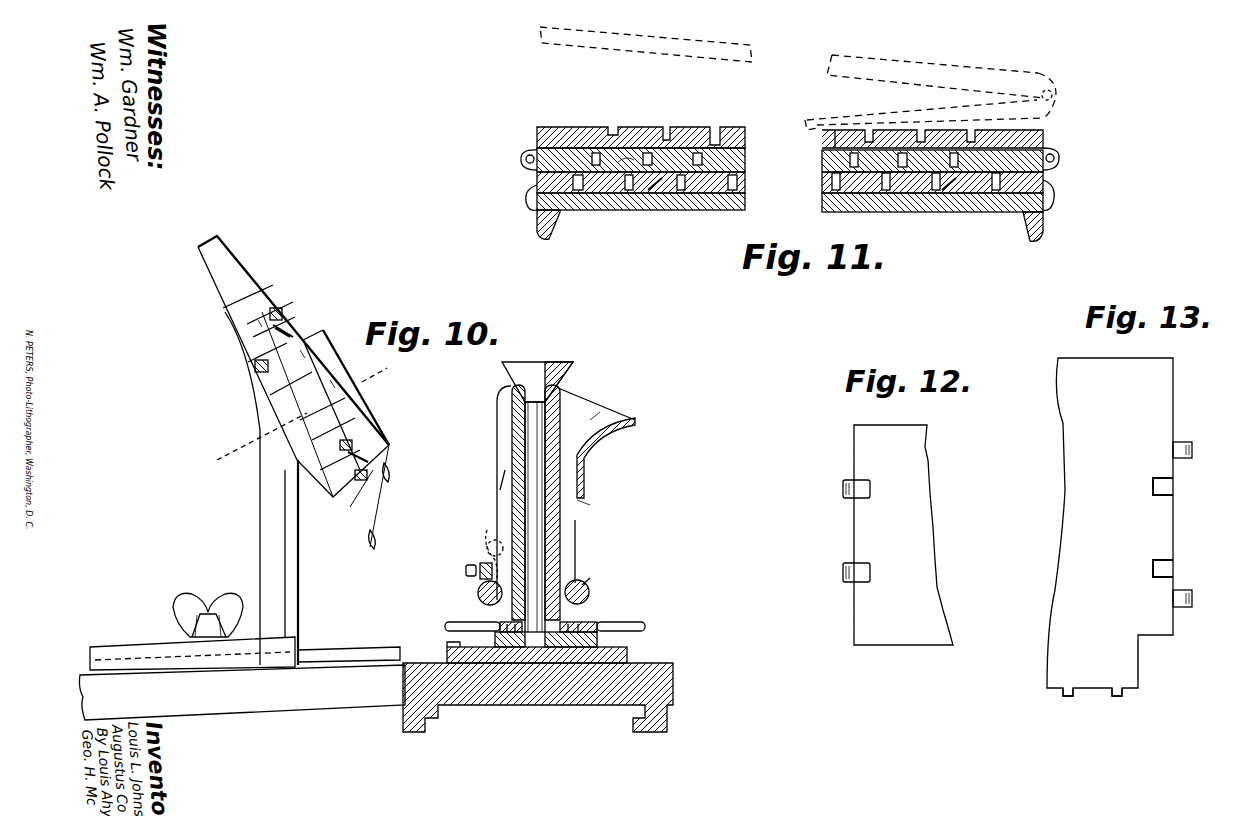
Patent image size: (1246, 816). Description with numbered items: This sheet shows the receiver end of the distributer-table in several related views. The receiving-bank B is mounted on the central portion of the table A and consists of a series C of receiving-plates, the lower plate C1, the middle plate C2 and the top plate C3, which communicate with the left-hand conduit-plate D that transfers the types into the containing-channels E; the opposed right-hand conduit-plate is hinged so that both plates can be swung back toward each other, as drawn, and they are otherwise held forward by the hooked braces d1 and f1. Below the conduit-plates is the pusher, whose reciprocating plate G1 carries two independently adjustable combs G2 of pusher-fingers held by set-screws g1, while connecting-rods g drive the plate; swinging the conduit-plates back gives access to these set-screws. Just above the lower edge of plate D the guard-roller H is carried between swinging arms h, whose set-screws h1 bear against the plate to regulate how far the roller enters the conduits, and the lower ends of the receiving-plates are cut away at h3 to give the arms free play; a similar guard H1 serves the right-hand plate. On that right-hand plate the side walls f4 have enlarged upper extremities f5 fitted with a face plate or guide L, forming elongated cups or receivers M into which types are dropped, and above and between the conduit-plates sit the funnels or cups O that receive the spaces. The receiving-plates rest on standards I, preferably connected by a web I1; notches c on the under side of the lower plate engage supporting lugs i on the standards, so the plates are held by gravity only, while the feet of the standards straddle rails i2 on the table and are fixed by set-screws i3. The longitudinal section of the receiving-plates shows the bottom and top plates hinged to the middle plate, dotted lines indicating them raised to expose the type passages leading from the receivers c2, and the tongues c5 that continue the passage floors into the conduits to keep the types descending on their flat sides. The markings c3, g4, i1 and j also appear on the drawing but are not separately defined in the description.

In FIG. 10, the table A is at (538, 697).
In FIG. 10, the receiving-bank B is at (242, 692).
In FIG. 10, the series of receiving-plates C is at (293, 391).
In FIG. 10, the lower receiving-plate C1 is at (277, 360).
In FIG. 11, the lower receiving-plate C1 is at (627, 205).
In FIG. 13, the lower receiving-plate C1 is at (1110, 527).
In FIG. 10, the middle receiving-plate C2 is at (311, 372).
In FIG. 10, the top receiving-plate C3 is at (338, 380).
In FIG. 10, the left-hand conduit-plate D is at (515, 502).
In FIG. 10, the type-containing channels E is at (558, 517).
In FIG. 10, the reciprocating plate G1 is at (600, 640).
In FIG. 10, the pusher-combs G2 is at (541, 616).
In FIG. 10, the guard-roller H is at (475, 593).
In FIG. 10, the guard H1 is at (591, 586).
In FIG. 10, the standards I is at (261, 488).
In FIG. 11, the standards I is at (792, 227).
In FIG. 11, the web I1 is at (790, 191).
In FIG. 12, the web I1 is at (903, 535).
In FIG. 10, the face plate or guide L is at (606, 458).
In FIG. 10, the elongated cups or receivers M is at (596, 402).
In FIG. 10, the funnels or cups O is at (537, 372).
In FIG. 11, the notches c is at (805, 182).
In FIG. 13, the notches c is at (1172, 524).
In FIG. 11, the type receivers c2 is at (804, 164).
In FIG. 11, the hinged arm c3 is at (798, 87).
In FIG. 10, the projecting tongues c5 is at (386, 511).
In FIG. 13, the projecting tongues c5 is at (1094, 701).
In FIG. 10, the hooked lever or brace d1 is at (495, 485).
In FIG. 10, the hooked lever or brace f1 is at (588, 576).
In FIG. 10, the side walls f4 is at (590, 505).
In FIG. 10, the upper extremities of side walls f5 is at (589, 415).
In FIG. 10, the connecting-rods g is at (490, 636).
In FIG. 10, the set-screws g1 is at (578, 620).
In FIG. 10, the block g4 is at (498, 618).
In FIG. 10, the swinging arms h is at (488, 552).
In FIG. 10, the set-screws h1 is at (468, 568).
In FIG. 10, the recess h3 is at (359, 491).
In FIG. 13, the recess h3 is at (1150, 660).
In FIG. 11, the supporting lugs i is at (786, 179).
In FIG. 12, the supporting lugs i is at (860, 531).
In FIG. 10, the slide plate i1 is at (192, 653).
In FIG. 10, the rails i2 is at (349, 648).
In FIG. 10, the set-screws i3 is at (208, 611).
In FIG. 10, the dotted guide line j is at (294, 419).